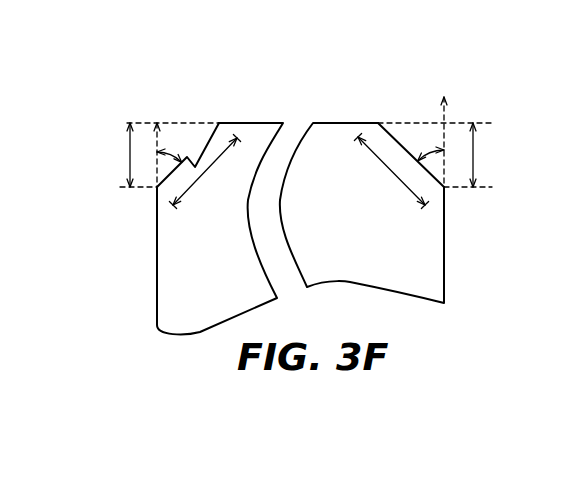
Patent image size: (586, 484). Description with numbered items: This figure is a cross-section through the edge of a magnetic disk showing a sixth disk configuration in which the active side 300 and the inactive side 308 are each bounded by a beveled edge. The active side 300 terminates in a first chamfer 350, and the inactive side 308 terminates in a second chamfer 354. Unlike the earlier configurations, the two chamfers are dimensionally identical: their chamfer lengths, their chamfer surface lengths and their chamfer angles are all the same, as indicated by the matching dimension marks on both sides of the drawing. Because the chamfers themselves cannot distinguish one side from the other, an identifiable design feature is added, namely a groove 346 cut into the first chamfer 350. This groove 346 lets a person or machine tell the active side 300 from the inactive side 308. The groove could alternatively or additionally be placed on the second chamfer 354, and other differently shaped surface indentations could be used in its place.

The active side 300 is at (157, 263).
The inactive side 308 is at (444, 243).
The groove 346 is at (190, 160).
The first chamfer 350 is at (144, 104).
The second chamfer 354 is at (468, 91).